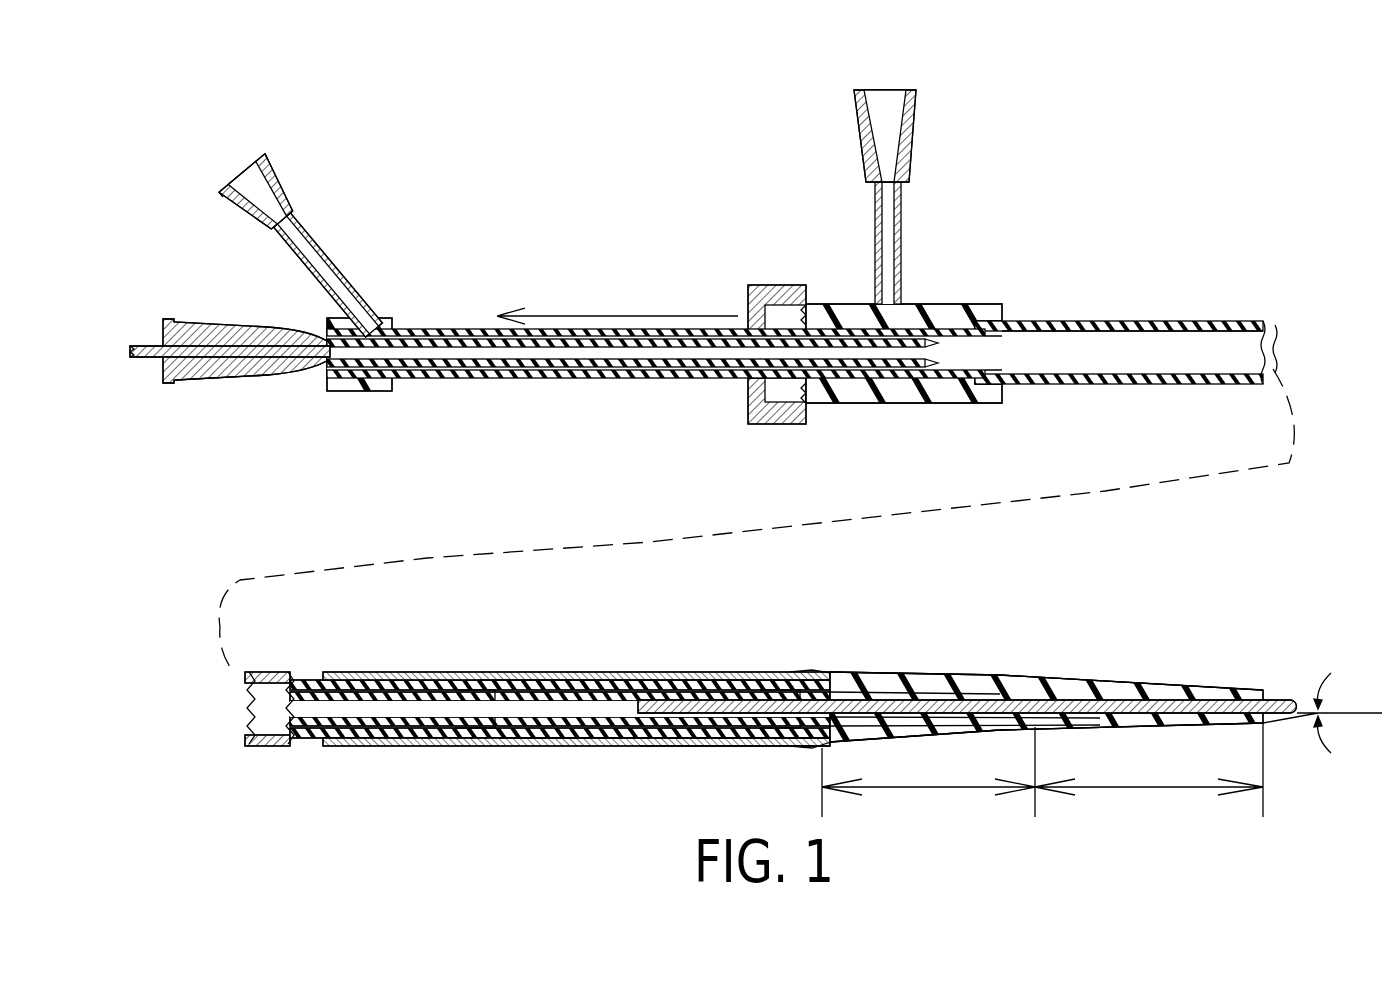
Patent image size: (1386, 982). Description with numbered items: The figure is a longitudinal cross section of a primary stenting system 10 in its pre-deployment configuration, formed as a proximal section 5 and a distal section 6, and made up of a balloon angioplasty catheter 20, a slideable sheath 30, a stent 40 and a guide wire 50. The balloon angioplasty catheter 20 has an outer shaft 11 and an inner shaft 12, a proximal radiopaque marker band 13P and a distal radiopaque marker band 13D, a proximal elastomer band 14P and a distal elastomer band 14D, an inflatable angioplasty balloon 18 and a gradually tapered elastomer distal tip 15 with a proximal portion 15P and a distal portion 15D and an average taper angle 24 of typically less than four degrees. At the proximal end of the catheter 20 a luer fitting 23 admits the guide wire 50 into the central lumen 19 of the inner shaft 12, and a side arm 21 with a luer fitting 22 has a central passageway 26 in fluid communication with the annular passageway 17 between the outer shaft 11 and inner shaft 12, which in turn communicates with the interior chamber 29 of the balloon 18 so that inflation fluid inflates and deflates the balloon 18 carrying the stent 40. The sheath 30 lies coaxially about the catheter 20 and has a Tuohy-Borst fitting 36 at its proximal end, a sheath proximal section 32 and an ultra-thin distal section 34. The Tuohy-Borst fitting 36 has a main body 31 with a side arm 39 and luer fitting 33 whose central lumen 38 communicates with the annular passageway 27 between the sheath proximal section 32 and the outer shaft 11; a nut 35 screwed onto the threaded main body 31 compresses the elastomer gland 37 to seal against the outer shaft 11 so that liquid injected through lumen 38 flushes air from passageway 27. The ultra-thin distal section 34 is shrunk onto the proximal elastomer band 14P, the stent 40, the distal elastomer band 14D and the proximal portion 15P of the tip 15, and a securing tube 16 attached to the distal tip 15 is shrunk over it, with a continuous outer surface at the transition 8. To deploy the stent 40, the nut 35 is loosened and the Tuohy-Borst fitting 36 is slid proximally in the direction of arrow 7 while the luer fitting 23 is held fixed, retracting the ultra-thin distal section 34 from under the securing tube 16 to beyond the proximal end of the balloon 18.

The proximal section 5 is at (535, 252).
The distal section 6 is at (597, 573).
The arrow 7 is at (616, 314).
The transition 8 is at (1097, 683).
The primary stenting system 10 is at (655, 128).
The outer shaft 11 is at (415, 331).
The inner shaft 12 is at (292, 348).
The proximal radiopaque marker band 13P is at (500, 725).
The distal radiopaque marker band 13D is at (760, 740).
The proximal elastomer band 14P is at (436, 670).
The distal elastomer band 14D is at (803, 667).
The gradually tapered elastomer distal tip 15 is at (1157, 687).
The gradually tapered proximal portion 15P is at (927, 723).
The gradually tapered distal portion 15D is at (1123, 723).
The securing tube 16 is at (1033, 677).
The annular passageway 17 is at (995, 371).
The inflatable angioplasty balloon 18 is at (585, 743).
The central lumen 19 is at (899, 350).
The balloon angioplasty catheter 20 is at (182, 400).
The side arm 21 is at (341, 280).
The luer fitting 22 is at (285, 194).
The luer fitting 23 is at (206, 398).
The average taper angle 24 is at (1320, 713).
The central passageway 26 is at (292, 233).
The annular passageway 27 is at (1004, 324).
The interior chamber 29 is at (670, 742).
The slideable sheath 30 is at (999, 280).
The main body 31 is at (887, 400).
The sheath proximal section 32 is at (1194, 321).
The luer fitting 33 is at (895, 180).
The ultra-thin distal section 34 is at (613, 673).
The nut 35 is at (760, 287).
The Tuohy-Borst fitting 36 is at (741, 414).
The elastomer gland 37 is at (834, 403).
The central lumen 38 is at (893, 178).
The side arm 39 is at (878, 239).
The stent 40 is at (727, 670).
The guide wire 50 is at (137, 352).